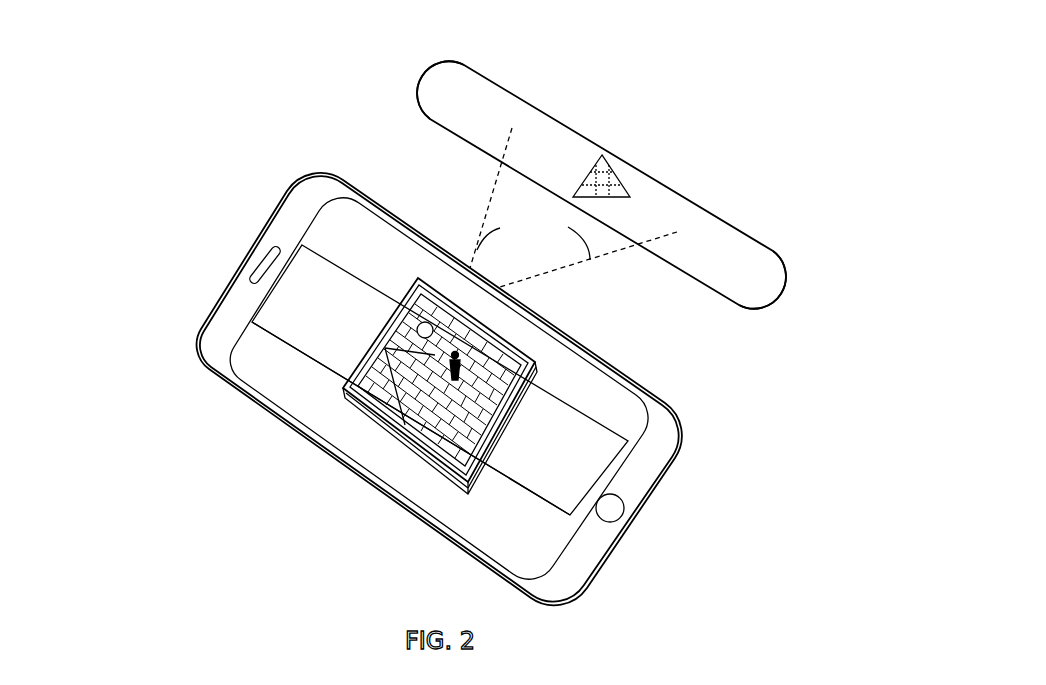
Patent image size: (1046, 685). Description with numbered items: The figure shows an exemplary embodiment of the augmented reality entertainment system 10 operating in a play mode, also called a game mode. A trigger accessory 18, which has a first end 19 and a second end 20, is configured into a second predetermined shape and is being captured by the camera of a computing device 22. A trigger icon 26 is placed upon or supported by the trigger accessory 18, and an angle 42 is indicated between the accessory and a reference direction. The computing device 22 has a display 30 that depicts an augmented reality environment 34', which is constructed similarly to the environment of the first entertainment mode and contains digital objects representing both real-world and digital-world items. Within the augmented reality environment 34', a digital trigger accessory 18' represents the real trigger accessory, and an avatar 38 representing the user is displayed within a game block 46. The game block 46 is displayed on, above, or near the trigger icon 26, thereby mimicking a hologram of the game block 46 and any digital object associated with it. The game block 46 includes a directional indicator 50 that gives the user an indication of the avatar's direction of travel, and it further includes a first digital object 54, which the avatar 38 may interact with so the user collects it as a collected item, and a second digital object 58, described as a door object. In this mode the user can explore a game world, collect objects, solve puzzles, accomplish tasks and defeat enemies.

The augmented reality entertainment system 10 is at (766, 50).
The trigger accessory 18 is at (601, 175).
The first end 19 is at (410, 79).
The second end 20 is at (795, 290).
The trigger icon 26 is at (618, 176).
The angle 42 is at (573, 207).
The computing device 22 is at (220, 298).
The display 30 is at (227, 355).
The augmented reality environment 34' is at (440, 326).
The digital trigger accessory 18' is at (386, 418).
The first digital object 54 is at (422, 282).
The second digital object 58 is at (373, 342).
The avatar 38 is at (537, 358).
The directional indicator 50 is at (400, 443).
The game block 46 is at (412, 478).